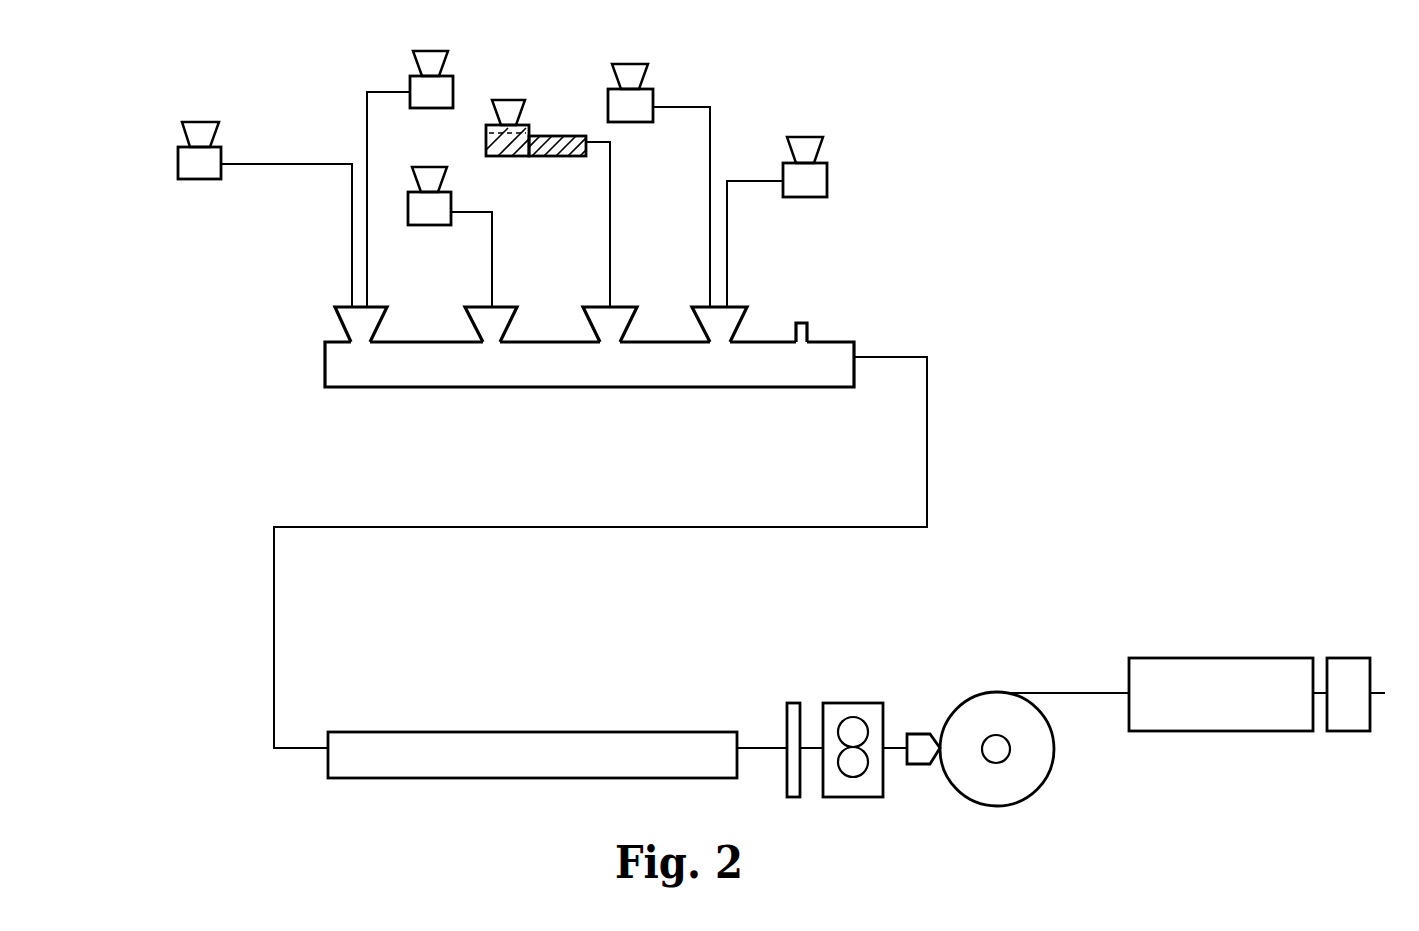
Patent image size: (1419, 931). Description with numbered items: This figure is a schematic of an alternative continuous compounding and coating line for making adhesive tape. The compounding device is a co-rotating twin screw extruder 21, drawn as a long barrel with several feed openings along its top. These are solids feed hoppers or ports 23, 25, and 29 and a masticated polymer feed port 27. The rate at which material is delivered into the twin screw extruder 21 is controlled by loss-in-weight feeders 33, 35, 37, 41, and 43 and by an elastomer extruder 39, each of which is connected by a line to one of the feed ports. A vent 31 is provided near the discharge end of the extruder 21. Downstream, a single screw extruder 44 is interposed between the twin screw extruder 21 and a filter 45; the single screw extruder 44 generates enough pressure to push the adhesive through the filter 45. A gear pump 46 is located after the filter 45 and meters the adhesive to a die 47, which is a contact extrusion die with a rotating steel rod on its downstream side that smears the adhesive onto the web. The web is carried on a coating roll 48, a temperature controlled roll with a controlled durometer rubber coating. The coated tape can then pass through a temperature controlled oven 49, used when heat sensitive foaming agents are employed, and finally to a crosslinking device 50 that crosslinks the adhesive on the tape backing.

The co-rotating twin screw extruder 21 is at (430, 368).
The solids feed port 23 is at (355, 322).
The solids feed port 25 is at (490, 320).
The masticated polymer feed port 27 is at (598, 322).
The solids feed port 29 is at (715, 322).
The vent 31 is at (807, 328).
The loss-in-weight feeder 33 is at (194, 172).
The loss-in-weight feeder 35 is at (443, 89).
The loss-in-weight feeder 37 is at (439, 199).
The elastomer extruder 39 is at (527, 125).
The loss-in-weight feeder 41 is at (639, 99).
The loss-in-weight feeder 43 is at (812, 177).
The single screw extruder 44 is at (584, 752).
The filter 45 is at (793, 797).
The gear pump 46 is at (863, 791).
The die 47 is at (913, 732).
The coating roll 48 is at (1030, 770).
The oven 49 is at (1227, 712).
The crosslinking device 50 is at (1346, 713).